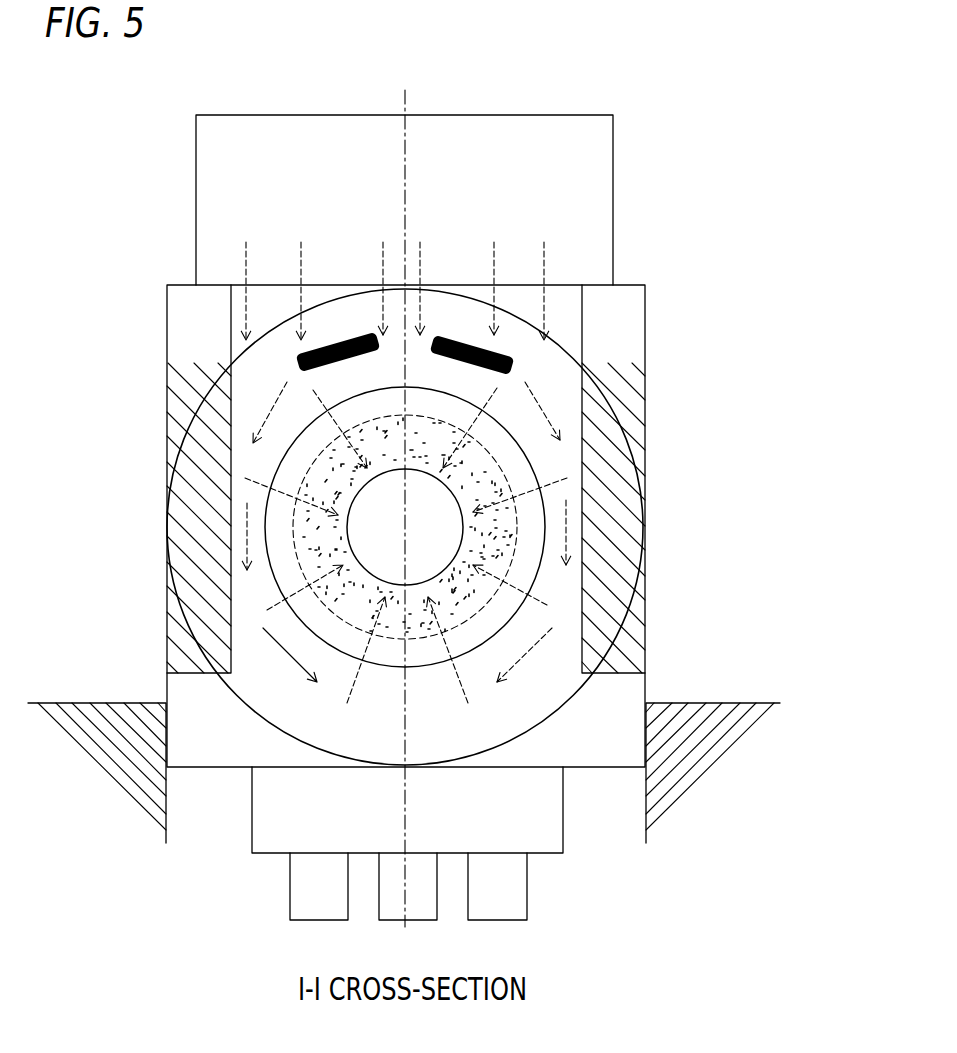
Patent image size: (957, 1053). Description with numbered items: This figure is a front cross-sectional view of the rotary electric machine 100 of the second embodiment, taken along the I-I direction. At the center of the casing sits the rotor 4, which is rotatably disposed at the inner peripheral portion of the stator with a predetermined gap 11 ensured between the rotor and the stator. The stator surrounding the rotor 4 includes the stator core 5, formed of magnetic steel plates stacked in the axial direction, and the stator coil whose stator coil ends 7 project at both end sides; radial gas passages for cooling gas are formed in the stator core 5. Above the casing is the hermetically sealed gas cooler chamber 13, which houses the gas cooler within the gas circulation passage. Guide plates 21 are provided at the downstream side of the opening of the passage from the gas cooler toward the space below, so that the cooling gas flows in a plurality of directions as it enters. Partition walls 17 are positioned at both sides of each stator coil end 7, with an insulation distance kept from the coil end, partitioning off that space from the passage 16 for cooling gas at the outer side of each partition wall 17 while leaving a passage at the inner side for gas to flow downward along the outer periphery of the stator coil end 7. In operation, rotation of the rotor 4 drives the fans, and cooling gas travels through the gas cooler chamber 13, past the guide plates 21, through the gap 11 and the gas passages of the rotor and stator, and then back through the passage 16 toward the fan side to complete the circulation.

The rotary electric machine 100 is at (713, 335).
The gas cooler chamber 13 is at (548, 153).
The passage for the cooling gas 16 is at (605, 472).
The partition wall 17 is at (172, 572).
The guide plate 21 is at (350, 337).
The stator coil end 7 is at (313, 468).
The stator core 5 is at (310, 495).
The rotor 4 is at (443, 540).
The gap 11 is at (333, 537).